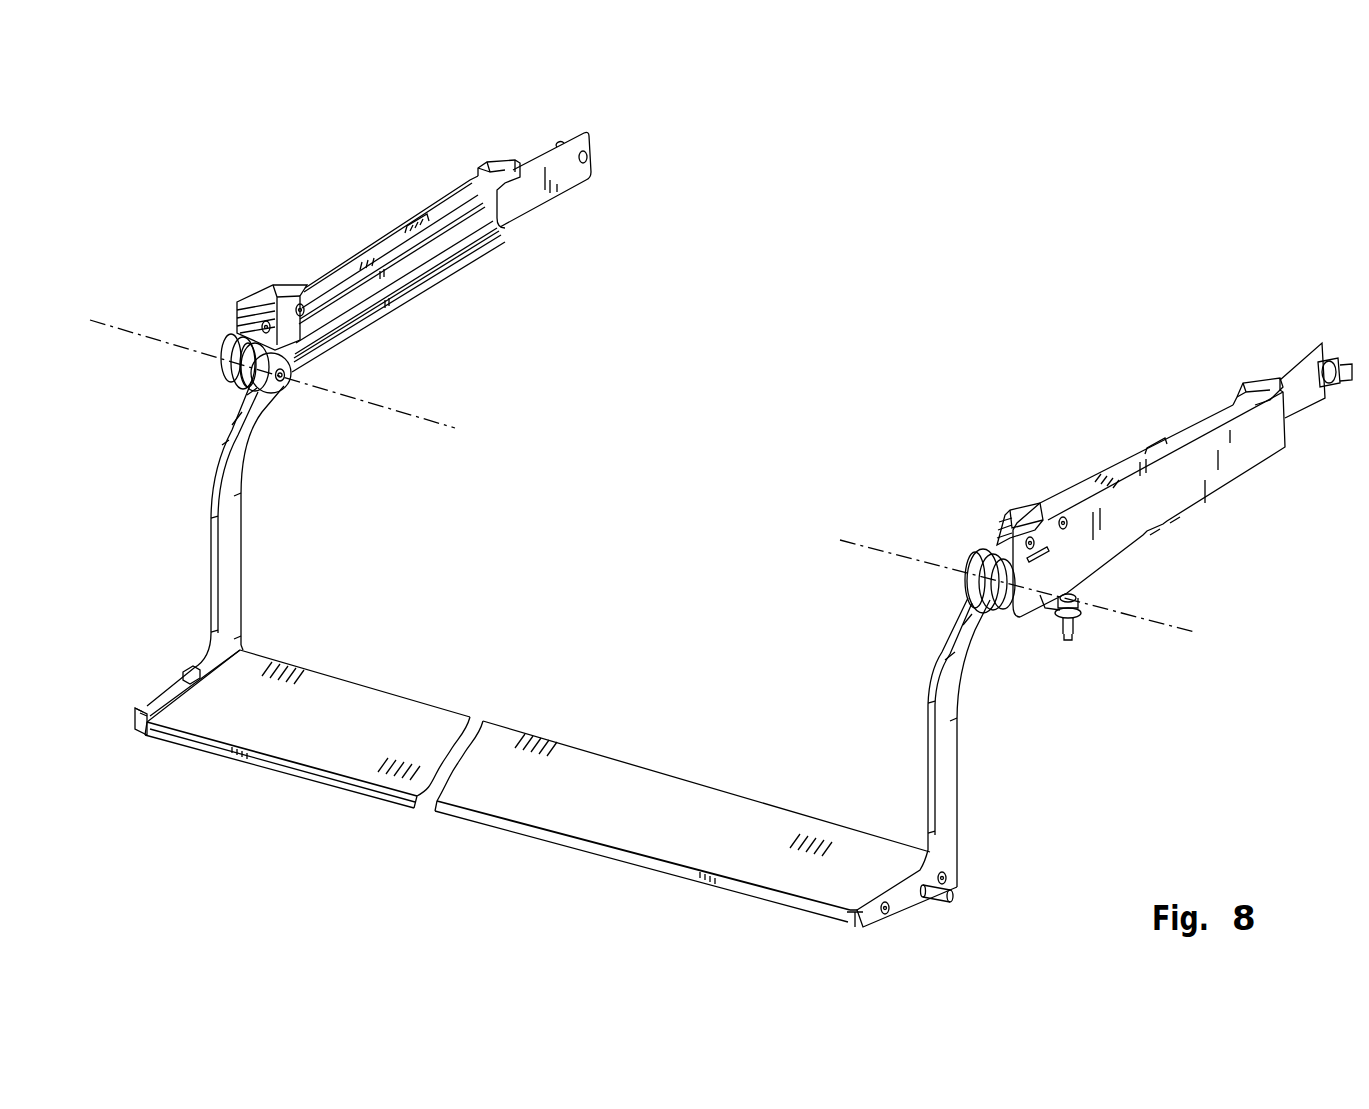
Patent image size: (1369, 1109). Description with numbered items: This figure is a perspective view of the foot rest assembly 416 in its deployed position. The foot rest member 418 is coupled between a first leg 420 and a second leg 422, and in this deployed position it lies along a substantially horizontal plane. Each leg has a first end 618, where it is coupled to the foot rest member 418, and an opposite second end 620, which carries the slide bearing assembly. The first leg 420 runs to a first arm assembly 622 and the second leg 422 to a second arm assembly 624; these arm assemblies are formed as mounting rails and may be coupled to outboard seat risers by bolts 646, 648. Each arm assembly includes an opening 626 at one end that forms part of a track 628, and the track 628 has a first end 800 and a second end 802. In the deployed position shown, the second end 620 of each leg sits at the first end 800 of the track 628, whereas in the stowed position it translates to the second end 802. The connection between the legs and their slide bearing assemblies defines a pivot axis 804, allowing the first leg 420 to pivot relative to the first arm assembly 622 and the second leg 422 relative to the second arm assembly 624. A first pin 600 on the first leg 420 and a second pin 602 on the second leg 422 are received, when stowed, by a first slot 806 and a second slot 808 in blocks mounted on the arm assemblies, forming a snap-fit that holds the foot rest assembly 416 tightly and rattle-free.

The foot rest assembly 416 is at (540, 626).
The foot rest member 418 is at (665, 792).
The first leg 420 is at (950, 700).
The second leg 422 is at (232, 552).
The first pin 600 is at (956, 896).
The second pin 602 is at (178, 665).
The first end 618 is at (142, 698).
The second end 620 is at (281, 386).
The first arm assembly 622 is at (1178, 497).
The second arm assembly 624 is at (567, 183).
The opening 626 is at (479, 191).
The track 628 is at (331, 327).
The bolt 646 is at (1080, 625).
The bolt 648 is at (1346, 377).
The first end 800 is at (282, 348).
The second end 802 is at (485, 229).
The pivot axis 804 is at (118, 334).
The first slot 806 is at (1004, 516).
The second slot 808 is at (258, 303).